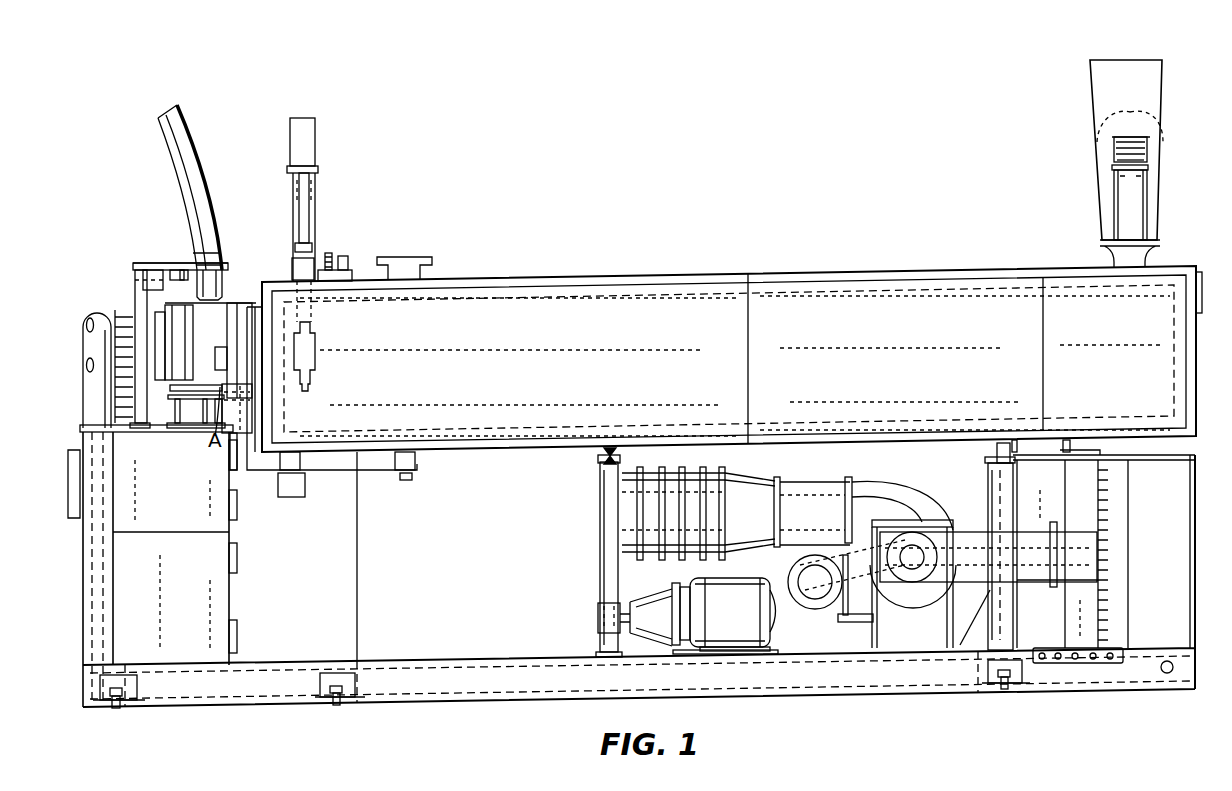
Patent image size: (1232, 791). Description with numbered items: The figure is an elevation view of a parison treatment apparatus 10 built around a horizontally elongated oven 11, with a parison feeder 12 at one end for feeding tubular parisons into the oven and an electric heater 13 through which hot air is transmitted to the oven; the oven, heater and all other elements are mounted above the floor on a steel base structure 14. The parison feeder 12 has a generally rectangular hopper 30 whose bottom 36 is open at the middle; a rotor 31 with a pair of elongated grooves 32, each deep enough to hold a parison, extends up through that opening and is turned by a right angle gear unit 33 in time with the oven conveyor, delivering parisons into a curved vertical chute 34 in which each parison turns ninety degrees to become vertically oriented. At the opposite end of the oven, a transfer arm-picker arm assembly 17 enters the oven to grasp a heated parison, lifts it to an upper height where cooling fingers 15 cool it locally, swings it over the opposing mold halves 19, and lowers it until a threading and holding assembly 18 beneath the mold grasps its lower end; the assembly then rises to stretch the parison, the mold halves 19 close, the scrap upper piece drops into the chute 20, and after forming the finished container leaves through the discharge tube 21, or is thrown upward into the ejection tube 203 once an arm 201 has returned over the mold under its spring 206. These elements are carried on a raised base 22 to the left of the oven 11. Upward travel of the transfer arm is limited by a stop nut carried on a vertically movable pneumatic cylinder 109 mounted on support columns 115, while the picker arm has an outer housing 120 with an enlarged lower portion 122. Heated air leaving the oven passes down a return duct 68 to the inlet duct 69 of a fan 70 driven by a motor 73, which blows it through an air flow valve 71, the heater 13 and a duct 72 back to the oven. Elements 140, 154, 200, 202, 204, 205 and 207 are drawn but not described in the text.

The parison treatment apparatus 10 is at (771, 266).
The oven 11 is at (929, 366).
The parison feeder 12 is at (1098, 213).
The electric heater 13 is at (737, 474).
The steel base structure 14 is at (852, 679).
The cooling fingers 15 is at (346, 262).
The transfer arm-picker arm assembly 17 is at (318, 198).
The threading and holding assembly 18 is at (191, 392).
The mold halves 19 is at (177, 316).
The chute 20 is at (208, 386).
The discharge tube 21 is at (235, 268).
The raised base 22 is at (86, 426).
The hopper 30 is at (1164, 86).
The rotor 31 is at (1152, 154).
The elongated grooves 32 is at (1131, 130).
The right angle gear unit 33 is at (1126, 149).
The vertical chute 34 is at (1150, 258).
The bottom 36 is at (1166, 115).
The return duct 68 is at (1065, 482).
The inlet duct 69 is at (975, 530).
The fan 70 is at (930, 490).
The air flow valve 71 is at (798, 520).
The duct 72 is at (598, 492).
The motor 73 is at (797, 575).
The pneumatic cylinder 109 is at (316, 146).
The support columns 115 is at (318, 172).
The outer housing 120 is at (306, 216).
The enlarged lower portion 122 is at (313, 262).
The bracket 140 is at (84, 340).
The rake 154 is at (127, 326).
The vertical bar 200 is at (134, 296).
The arm 201 is at (140, 266).
The guide 202 is at (134, 285).
The ejection tube 203 is at (199, 142).
The block 204 is at (136, 275).
The stop 205 is at (185, 268).
The spring 206 is at (170, 272).
The chute outlet 207 is at (218, 287).